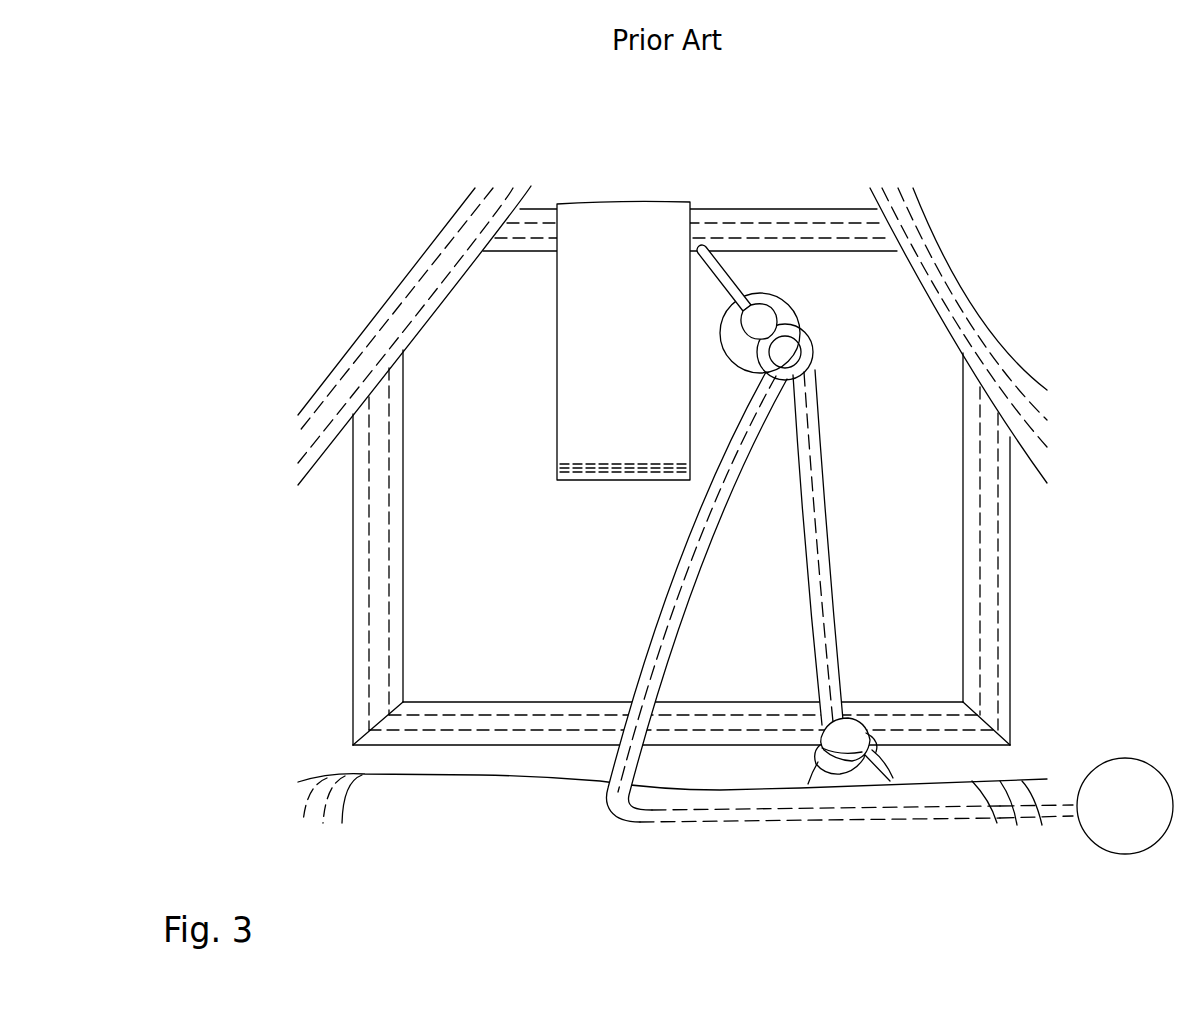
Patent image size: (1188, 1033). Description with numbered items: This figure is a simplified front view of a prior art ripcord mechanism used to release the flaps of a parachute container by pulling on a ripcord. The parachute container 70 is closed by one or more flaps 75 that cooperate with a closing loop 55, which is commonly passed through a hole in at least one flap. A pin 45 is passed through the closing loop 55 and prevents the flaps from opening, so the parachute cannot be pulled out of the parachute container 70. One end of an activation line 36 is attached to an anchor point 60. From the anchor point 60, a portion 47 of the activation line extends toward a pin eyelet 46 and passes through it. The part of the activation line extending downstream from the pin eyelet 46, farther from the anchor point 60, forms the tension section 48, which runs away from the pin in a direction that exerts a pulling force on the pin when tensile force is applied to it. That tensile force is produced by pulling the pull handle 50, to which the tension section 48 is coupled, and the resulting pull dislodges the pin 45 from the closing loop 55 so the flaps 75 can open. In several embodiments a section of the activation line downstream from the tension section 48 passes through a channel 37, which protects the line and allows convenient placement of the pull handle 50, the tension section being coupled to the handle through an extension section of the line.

The activation line 36 is at (1060, 810).
The channel 37 is at (608, 815).
The pin 45 is at (715, 267).
The pin eyelet 46 is at (772, 340).
The portion of the activation line 47 is at (820, 550).
The tension section 48 is at (663, 622).
The pull handle 50 is at (1131, 757).
The closing loop 55 is at (762, 318).
The anchor point 60 is at (850, 763).
The parachute container 70 is at (337, 493).
The flap 75 is at (897, 330).